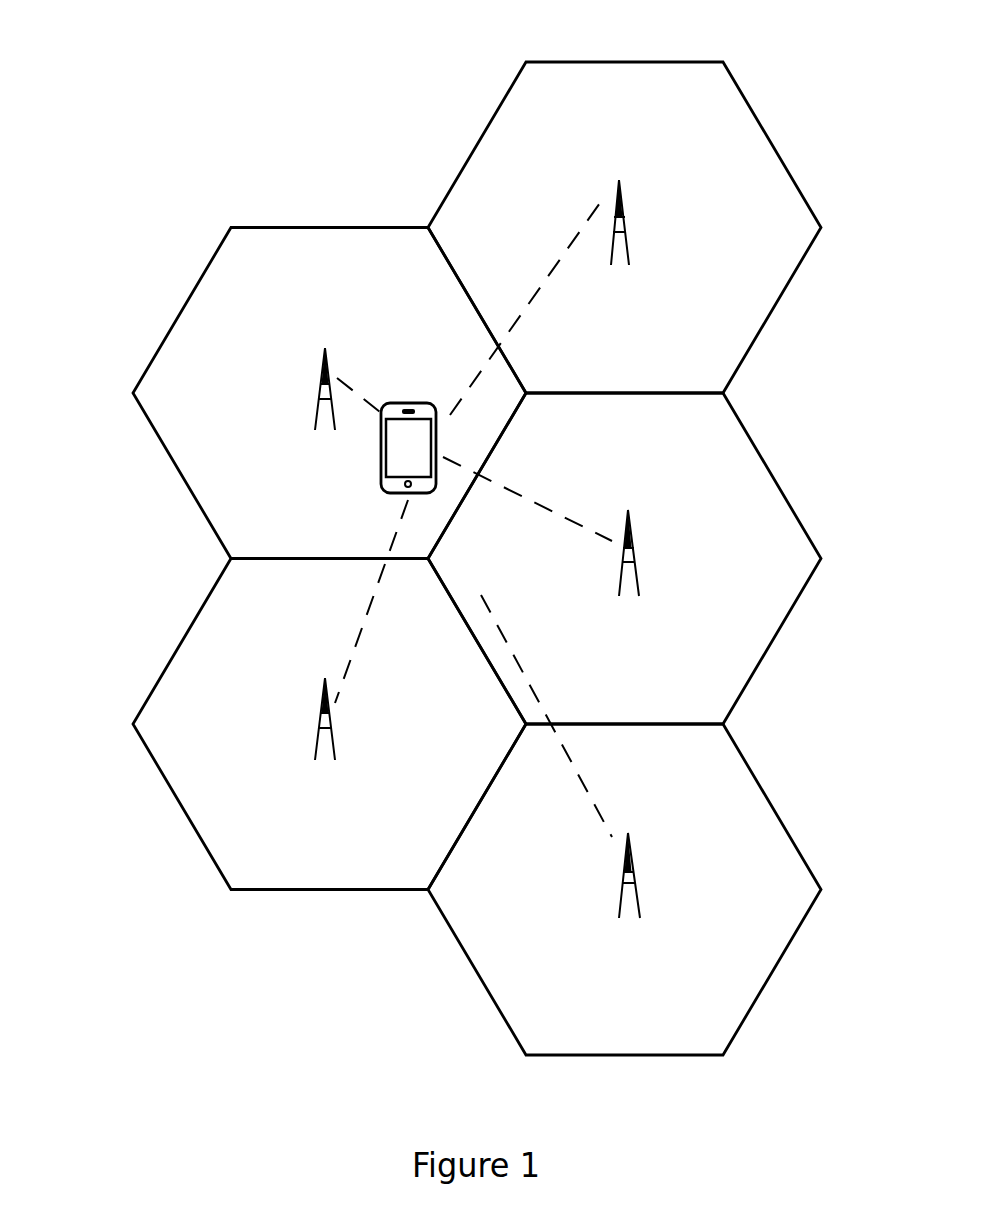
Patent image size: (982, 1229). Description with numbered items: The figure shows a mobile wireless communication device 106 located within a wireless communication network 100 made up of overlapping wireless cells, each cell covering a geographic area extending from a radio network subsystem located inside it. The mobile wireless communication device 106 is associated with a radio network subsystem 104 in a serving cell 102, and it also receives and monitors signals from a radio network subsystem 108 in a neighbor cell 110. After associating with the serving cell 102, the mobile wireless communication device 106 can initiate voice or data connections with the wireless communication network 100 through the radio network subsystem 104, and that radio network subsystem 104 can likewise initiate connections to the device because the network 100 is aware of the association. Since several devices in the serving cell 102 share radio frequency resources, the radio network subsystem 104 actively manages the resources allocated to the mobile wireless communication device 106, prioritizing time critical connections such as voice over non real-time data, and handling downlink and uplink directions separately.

The wireless communication network 100 is at (120, 96).
The serving cell 102 is at (203, 263).
The radio network subsystem 104 is at (334, 367).
The mobile wireless communication device 106 is at (382, 446).
The radio network subsystem 108 is at (637, 530).
The neighbor cell 110 is at (757, 450).